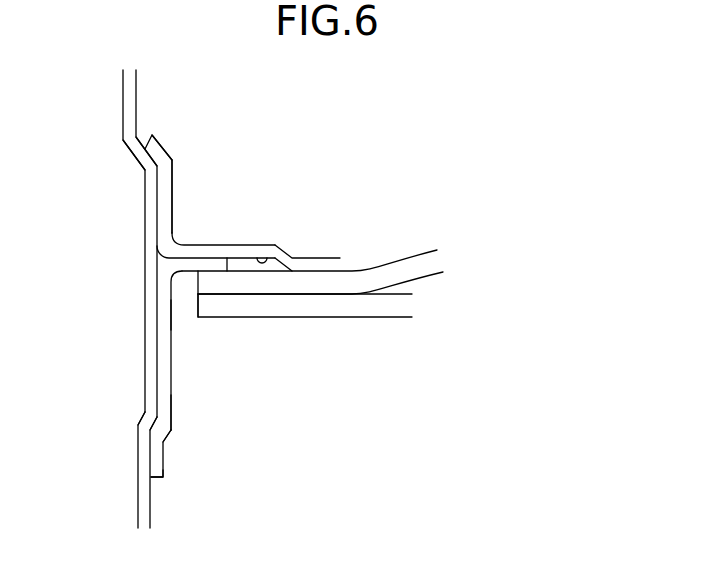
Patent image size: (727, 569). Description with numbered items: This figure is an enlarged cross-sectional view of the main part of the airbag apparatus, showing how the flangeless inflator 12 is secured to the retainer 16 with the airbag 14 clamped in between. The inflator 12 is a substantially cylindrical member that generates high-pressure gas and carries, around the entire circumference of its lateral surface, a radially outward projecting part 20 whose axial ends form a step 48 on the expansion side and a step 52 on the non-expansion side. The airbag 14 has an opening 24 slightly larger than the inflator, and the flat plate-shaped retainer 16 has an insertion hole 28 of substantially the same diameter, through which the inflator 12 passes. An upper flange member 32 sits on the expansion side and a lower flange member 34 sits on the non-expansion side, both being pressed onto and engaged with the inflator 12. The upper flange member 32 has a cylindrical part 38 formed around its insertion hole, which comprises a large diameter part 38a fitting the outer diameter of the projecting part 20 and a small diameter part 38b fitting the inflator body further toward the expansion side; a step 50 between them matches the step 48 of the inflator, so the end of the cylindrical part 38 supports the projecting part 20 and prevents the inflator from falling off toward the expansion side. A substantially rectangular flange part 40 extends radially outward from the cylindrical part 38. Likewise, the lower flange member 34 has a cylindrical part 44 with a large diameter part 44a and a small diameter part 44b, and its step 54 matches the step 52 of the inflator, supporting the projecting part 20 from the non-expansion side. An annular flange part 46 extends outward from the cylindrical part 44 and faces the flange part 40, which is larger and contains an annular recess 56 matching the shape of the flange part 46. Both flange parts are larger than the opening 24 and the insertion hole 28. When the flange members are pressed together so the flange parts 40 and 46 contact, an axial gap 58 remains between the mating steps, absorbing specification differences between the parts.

The inflator 12 is at (138, 497).
The airbag 14 is at (390, 270).
The retainer 16 is at (390, 318).
The projecting part 20 is at (152, 361).
The opening 24 is at (180, 281).
The insertion hole 28 is at (198, 305).
The upper flange member 32 is at (202, 243).
The lower flange member 34 is at (163, 323).
The cylindrical part 38 is at (241, 118).
The large diameter part 38a is at (173, 187).
The small diameter part 38b is at (172, 157).
The flange part 40 is at (240, 243).
The cylindrical part 44 is at (241, 430).
The large diameter part 44a is at (172, 403).
The small diameter part 44b is at (168, 440).
The flange part 46 is at (215, 265).
The step 48 is at (131, 158).
The step 50 is at (168, 150).
The step 52 is at (140, 418).
The step 54 is at (164, 470).
The annular recess 56 is at (266, 256).
The gap 58 is at (149, 427).